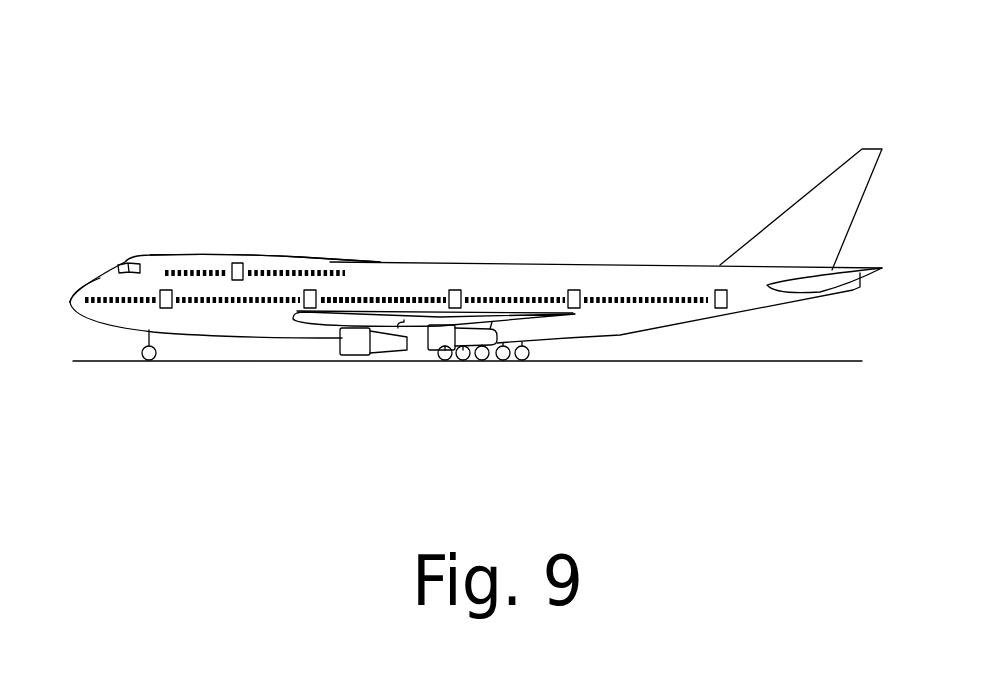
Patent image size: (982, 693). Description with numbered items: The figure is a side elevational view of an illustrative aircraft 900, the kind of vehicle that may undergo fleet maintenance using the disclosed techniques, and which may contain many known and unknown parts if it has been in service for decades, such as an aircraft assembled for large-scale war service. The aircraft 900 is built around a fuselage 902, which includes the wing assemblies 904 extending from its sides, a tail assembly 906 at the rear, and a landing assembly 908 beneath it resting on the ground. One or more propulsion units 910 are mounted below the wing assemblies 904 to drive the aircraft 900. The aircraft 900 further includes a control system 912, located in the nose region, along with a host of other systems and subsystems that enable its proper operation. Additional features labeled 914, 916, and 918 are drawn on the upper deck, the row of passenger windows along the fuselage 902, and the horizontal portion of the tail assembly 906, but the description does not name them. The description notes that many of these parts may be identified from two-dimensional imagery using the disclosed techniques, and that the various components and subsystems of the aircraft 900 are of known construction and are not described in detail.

The aircraft 900 is at (146, 82).
The fuselage 902 is at (603, 332).
The wing assemblies 904 is at (317, 320).
The tail assembly 906 is at (790, 172).
The landing assembly 908 is at (467, 380).
The propulsion units 910 is at (348, 353).
The control system 912 is at (70, 328).
The upper deck 914 is at (348, 233).
The passenger windows 916 is at (401, 280).
The horizontal stabilizer 918 is at (720, 228).